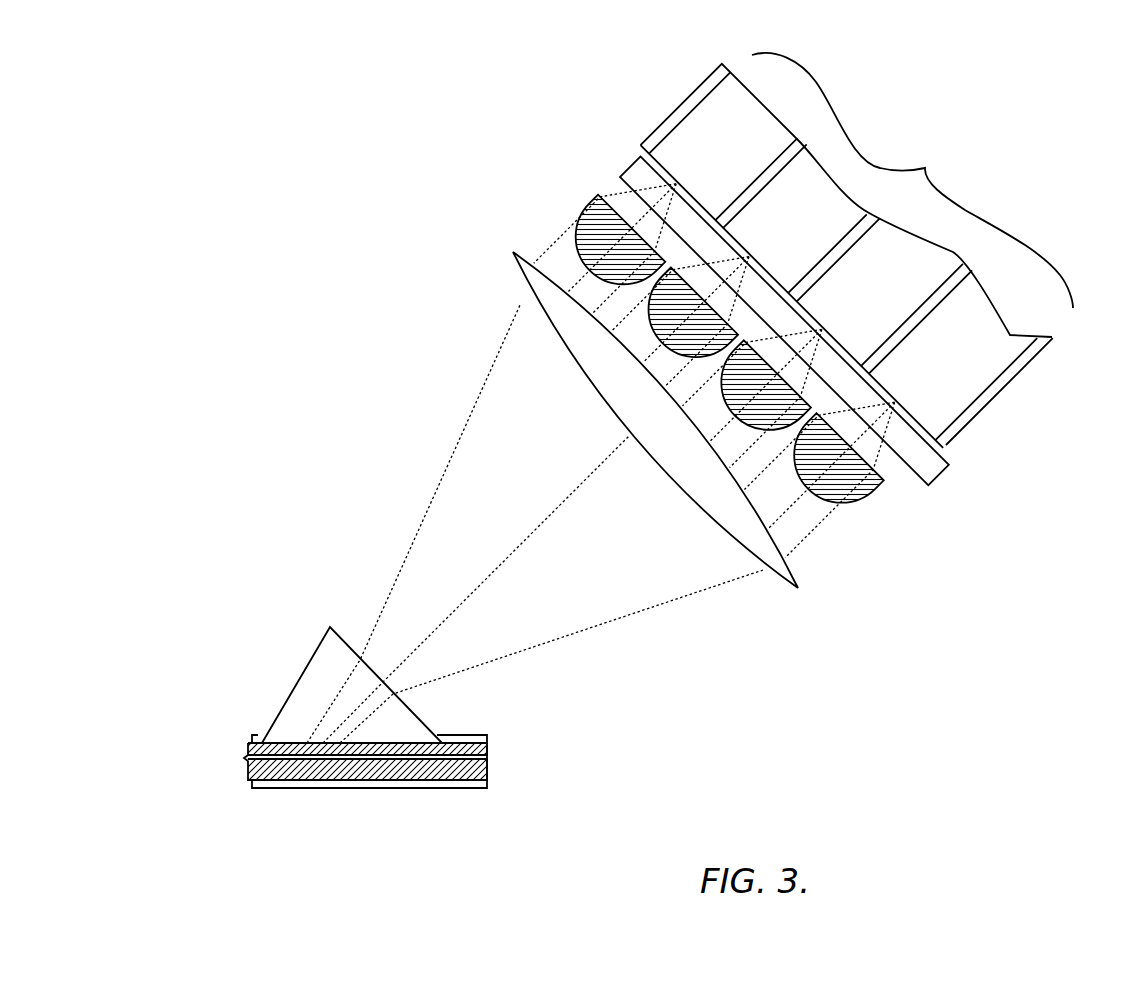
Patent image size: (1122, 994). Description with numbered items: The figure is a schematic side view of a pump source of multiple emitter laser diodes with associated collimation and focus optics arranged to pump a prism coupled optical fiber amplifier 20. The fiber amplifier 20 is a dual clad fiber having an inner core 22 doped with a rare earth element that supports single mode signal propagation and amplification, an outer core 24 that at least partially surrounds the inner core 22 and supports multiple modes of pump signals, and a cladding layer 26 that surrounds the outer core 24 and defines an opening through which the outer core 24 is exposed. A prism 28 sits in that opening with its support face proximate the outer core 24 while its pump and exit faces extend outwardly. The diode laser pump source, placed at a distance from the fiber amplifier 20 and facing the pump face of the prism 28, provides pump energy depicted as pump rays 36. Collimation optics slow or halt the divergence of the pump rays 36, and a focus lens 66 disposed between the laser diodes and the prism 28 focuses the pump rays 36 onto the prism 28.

The prism coupled optical fiber amplifier 20 is at (350, 777).
The inner core 22 is at (452, 755).
The outer core 24 is at (397, 772).
The cladding layer 26 is at (365, 783).
The prism 28 is at (320, 642).
The pump rays 36 is at (653, 608).
The focus lens 66 is at (519, 280).